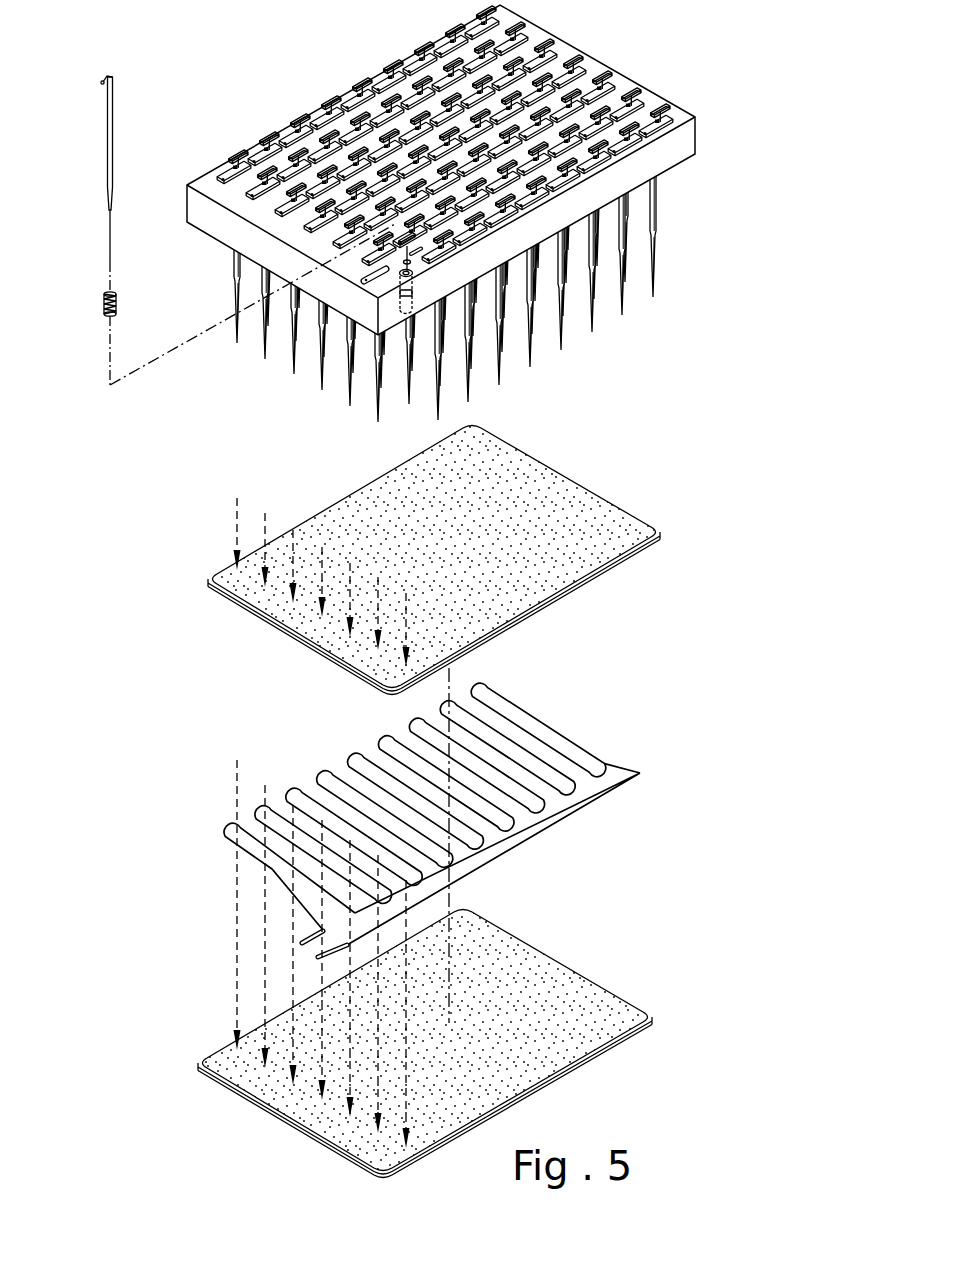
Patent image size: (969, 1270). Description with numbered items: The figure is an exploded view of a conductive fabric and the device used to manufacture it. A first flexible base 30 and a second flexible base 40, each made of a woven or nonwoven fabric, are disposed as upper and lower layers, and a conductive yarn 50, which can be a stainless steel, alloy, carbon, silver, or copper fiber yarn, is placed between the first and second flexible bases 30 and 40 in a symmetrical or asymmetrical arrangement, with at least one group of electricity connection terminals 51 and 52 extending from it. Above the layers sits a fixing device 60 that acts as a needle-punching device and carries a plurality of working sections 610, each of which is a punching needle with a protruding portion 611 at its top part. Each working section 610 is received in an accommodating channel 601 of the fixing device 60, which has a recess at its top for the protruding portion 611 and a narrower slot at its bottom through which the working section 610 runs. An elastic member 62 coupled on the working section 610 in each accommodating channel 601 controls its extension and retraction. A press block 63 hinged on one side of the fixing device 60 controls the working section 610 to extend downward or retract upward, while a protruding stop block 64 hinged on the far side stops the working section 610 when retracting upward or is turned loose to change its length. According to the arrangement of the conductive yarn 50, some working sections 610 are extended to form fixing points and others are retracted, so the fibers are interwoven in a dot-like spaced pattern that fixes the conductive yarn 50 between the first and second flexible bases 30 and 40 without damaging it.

The fixing device 60 is at (669, 94).
The accommodating channel 601 is at (413, 281).
The working section 610 is at (110, 210).
The protruding portion 611 is at (105, 79).
The elastic member 62 is at (104, 304).
The press block 63 is at (376, 275).
The protruding stop block 64 is at (420, 254).
The first flexible base 30 is at (575, 513).
The conductive yarn 50 is at (555, 715).
The electricity connection terminal 51 is at (308, 951).
The electricity connection terminal 52 is at (300, 937).
The second flexible base 40 is at (553, 968).